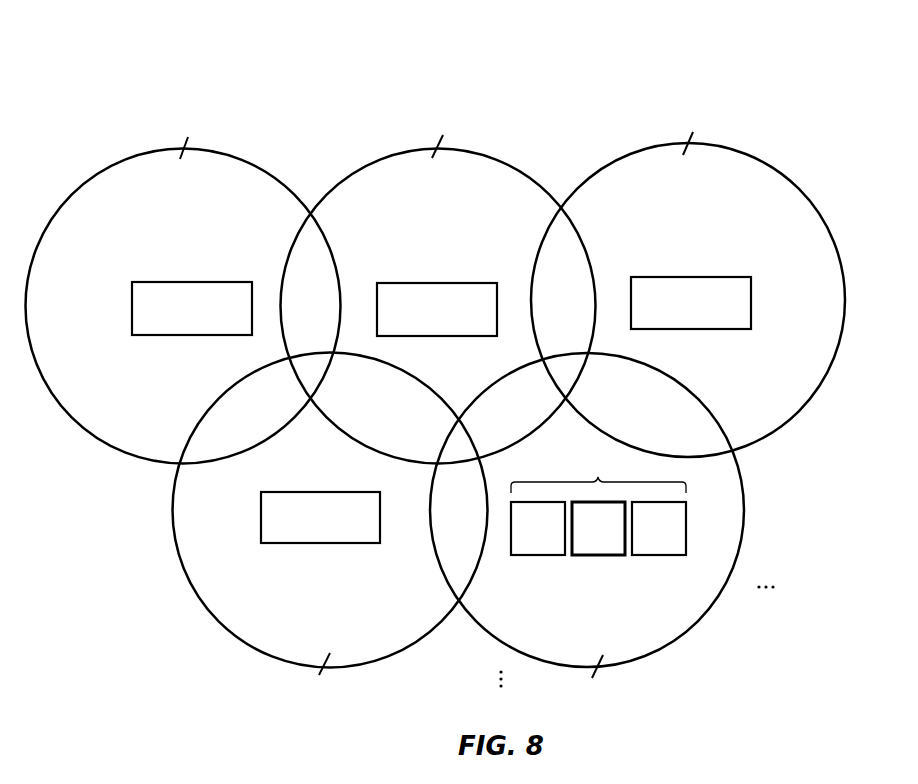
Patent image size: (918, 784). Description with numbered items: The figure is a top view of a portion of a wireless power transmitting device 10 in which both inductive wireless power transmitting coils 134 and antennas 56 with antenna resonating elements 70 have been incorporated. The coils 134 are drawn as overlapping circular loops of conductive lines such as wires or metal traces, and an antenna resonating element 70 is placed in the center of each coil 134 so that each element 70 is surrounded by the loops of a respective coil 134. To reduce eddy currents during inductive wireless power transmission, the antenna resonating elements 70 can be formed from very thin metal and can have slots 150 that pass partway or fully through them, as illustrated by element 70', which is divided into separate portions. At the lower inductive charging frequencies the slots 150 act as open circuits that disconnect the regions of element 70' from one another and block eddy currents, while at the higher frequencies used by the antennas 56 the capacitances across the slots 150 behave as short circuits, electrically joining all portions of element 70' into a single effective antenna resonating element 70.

The wireless power transmitting device 10 is at (722, 78).
The inductive wireless power transmitting coils 134 is at (479, 155).
The antenna resonating elements 70 is at (441, 378).
The slotted antenna resonating element 70' is at (598, 502).
The slots 150 is at (575, 562).
The antennas 56 is at (173, 358).